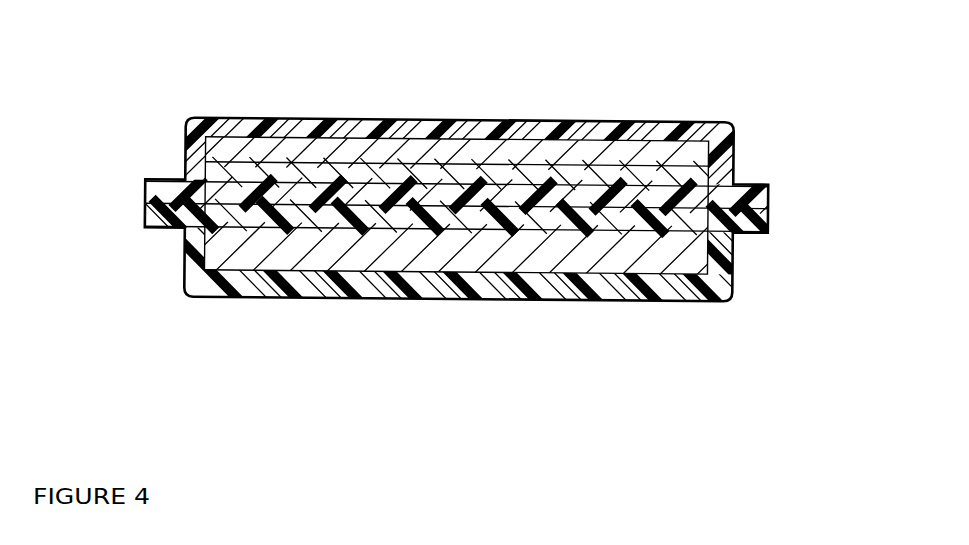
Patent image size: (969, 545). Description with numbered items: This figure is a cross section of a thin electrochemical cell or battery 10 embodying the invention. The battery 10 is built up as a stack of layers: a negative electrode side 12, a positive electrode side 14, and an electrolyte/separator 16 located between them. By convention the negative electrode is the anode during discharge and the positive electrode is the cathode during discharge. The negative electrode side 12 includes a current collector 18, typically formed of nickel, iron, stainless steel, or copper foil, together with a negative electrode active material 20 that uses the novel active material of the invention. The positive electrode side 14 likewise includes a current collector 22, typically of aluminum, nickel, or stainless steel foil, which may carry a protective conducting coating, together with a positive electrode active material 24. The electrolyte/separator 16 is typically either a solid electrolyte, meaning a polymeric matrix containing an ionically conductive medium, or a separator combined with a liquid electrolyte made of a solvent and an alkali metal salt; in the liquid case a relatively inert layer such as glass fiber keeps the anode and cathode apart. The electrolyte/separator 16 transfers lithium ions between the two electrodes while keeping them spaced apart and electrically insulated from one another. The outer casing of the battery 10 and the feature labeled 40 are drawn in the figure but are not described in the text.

The electrochemical cell or battery 10 is at (745, 122).
The negative electrode side 12 is at (425, 136).
The positive electrode side 14 is at (320, 278).
The electrolyte/separator 16 is at (675, 195).
The current collector 18 is at (557, 148).
The negative electrode active material 20 is at (213, 172).
The current collector 22 is at (220, 248).
The positive electrode active material 24 is at (686, 226).
The edge seal 40 is at (716, 301).